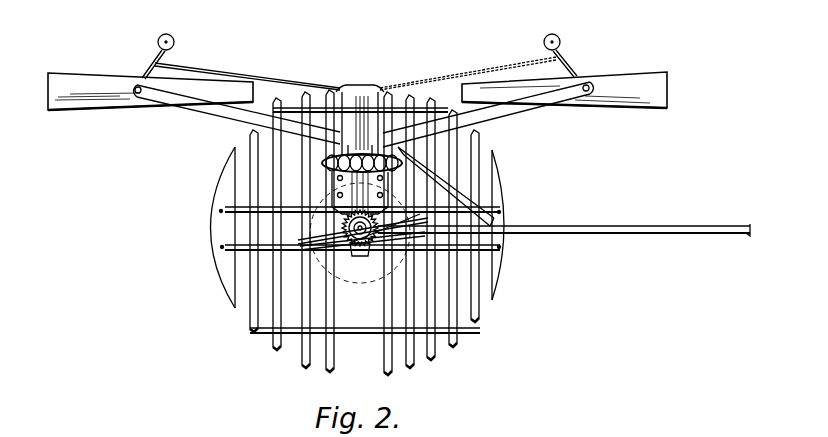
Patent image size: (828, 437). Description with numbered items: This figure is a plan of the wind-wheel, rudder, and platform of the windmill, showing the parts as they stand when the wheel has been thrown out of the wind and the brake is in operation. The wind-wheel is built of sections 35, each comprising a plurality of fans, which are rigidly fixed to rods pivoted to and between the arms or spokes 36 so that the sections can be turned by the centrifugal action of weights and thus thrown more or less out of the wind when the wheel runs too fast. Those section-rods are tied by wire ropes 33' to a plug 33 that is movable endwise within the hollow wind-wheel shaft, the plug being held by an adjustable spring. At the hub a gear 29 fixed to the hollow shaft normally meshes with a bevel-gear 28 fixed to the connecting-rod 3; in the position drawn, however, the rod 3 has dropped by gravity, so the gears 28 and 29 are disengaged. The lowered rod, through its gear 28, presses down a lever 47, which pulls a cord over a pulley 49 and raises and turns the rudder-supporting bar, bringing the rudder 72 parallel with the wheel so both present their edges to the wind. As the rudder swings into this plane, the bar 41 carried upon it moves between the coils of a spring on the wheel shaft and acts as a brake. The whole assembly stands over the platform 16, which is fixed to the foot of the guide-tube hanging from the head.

The platform 16 is at (358, 237).
The wind-wheel sections 35 is at (117, 100).
The wire ropes 33' is at (359, 62).
The plug 33 is at (366, 110).
The arms or spokes 36 is at (213, 110).
The connecting-rod 3 is at (360, 266).
The lever 47 is at (385, 238).
The rudder 72 is at (628, 220).
The bar 41 is at (445, 145).
The gear 29 is at (335, 214).
The bevel-gear 28 is at (352, 245).
The pulley 49 is at (380, 252).